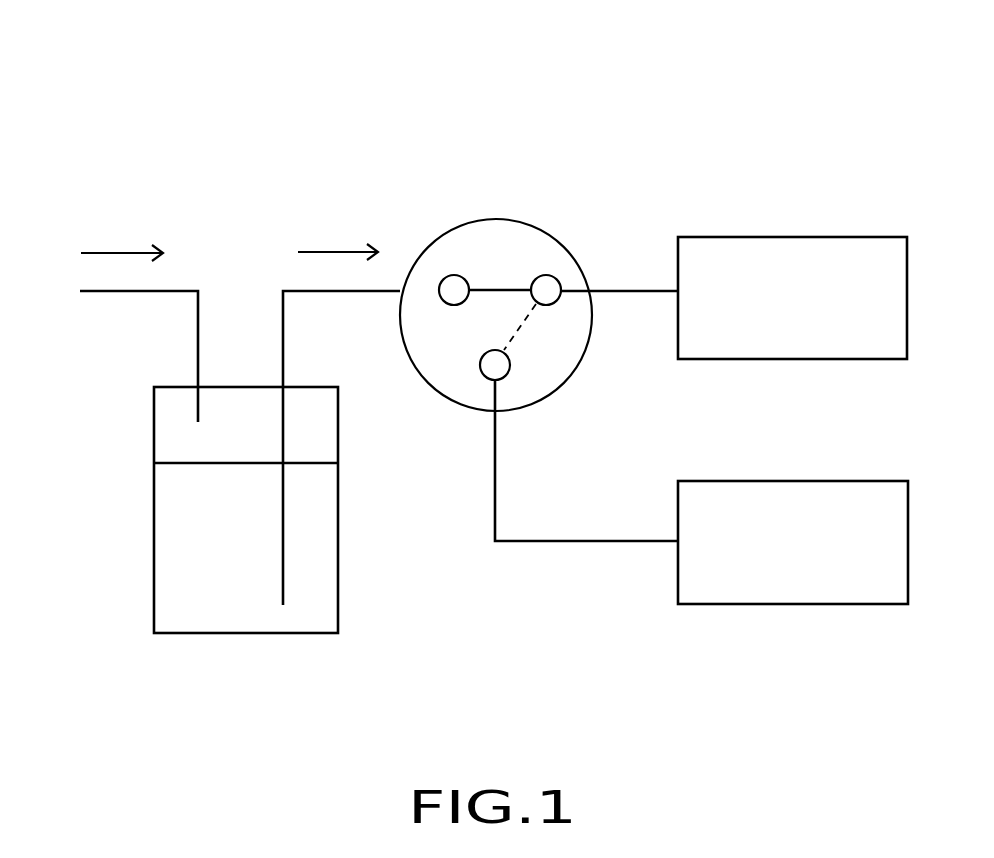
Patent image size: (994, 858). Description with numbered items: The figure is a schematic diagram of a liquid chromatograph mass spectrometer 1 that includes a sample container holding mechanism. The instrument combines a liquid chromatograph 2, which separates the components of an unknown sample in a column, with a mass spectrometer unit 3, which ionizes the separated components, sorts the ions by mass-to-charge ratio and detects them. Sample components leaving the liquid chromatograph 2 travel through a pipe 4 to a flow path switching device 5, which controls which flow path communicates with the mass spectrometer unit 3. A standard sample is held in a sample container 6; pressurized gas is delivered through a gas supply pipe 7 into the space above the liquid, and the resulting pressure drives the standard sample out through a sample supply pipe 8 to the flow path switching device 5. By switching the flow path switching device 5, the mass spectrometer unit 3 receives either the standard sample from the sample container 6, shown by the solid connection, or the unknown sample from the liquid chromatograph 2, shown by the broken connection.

The liquid chromatograph mass spectrometer 1 is at (662, 97).
The liquid chromatograph 2 is at (867, 604).
The mass spectrometer unit 3 is at (860, 237).
The pipe 4 is at (539, 541).
The flow path switching device 5 is at (497, 218).
The sample container 6 is at (226, 633).
The gas supply pipe 7 is at (198, 317).
The sample supply pipe 8 is at (283, 317).